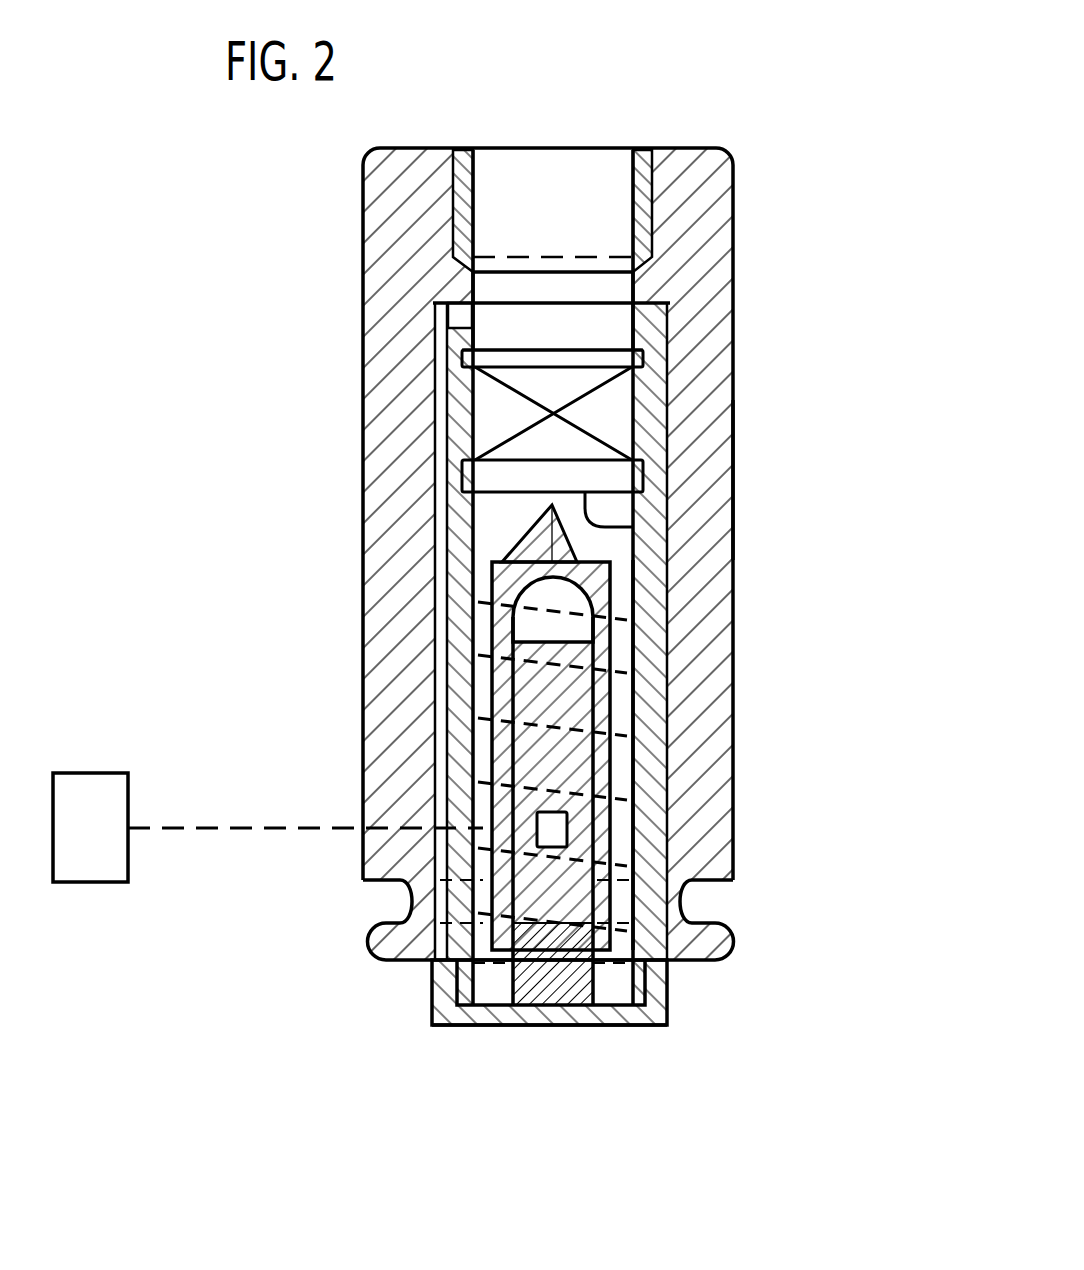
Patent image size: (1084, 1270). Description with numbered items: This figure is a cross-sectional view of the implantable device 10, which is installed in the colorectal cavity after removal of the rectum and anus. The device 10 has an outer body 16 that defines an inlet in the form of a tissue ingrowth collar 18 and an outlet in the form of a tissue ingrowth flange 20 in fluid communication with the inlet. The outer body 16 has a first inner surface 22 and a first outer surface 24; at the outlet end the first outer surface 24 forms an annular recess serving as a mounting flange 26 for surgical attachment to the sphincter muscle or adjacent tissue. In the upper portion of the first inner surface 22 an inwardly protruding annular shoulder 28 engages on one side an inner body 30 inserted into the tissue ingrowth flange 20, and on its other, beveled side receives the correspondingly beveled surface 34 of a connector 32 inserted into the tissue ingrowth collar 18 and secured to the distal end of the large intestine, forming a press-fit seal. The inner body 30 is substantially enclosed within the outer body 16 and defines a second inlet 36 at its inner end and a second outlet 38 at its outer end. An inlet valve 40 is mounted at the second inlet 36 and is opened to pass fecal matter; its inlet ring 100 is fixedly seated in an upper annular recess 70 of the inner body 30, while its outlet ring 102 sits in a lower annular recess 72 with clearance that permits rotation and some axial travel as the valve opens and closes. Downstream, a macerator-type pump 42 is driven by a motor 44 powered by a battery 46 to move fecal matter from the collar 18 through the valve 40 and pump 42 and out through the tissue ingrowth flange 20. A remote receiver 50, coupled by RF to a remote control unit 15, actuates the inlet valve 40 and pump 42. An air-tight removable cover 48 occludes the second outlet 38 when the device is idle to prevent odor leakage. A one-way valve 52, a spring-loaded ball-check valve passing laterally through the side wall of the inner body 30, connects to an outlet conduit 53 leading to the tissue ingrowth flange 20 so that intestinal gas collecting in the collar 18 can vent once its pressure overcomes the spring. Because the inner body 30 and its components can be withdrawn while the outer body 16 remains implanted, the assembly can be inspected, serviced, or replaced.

The device 10 is at (748, 143).
The remote control unit 15 is at (268, 827).
The outer body 16 is at (733, 190).
The tissue ingrowth collar 18 is at (540, 183).
The tissue ingrowth flange 20 is at (432, 963).
The first inner surface 22 is at (670, 378).
The first outer surface 24 is at (735, 475).
The mounting flange 26 is at (692, 898).
The annular shoulder 28 is at (633, 287).
The inner body 30 is at (647, 578).
The connector 32 is at (643, 158).
The beveled surface 34 is at (627, 258).
The second inlet 36 is at (510, 327).
The second outlet 38 is at (487, 993).
The inlet valve 40 is at (523, 427).
The macerator-type pump 42 is at (497, 602).
The motor 44 is at (535, 690).
The battery 46 is at (568, 988).
The removable cover 48 is at (610, 1027).
The remote receiver 50 is at (567, 828).
The one-way valve 52 is at (453, 315).
The outlet conduit 53 is at (443, 362).
The upper annular recess 70 is at (645, 350).
The lower annular recess 72 is at (645, 482).
The inlet ring 100 is at (560, 358).
The outlet ring 102 is at (632, 527).